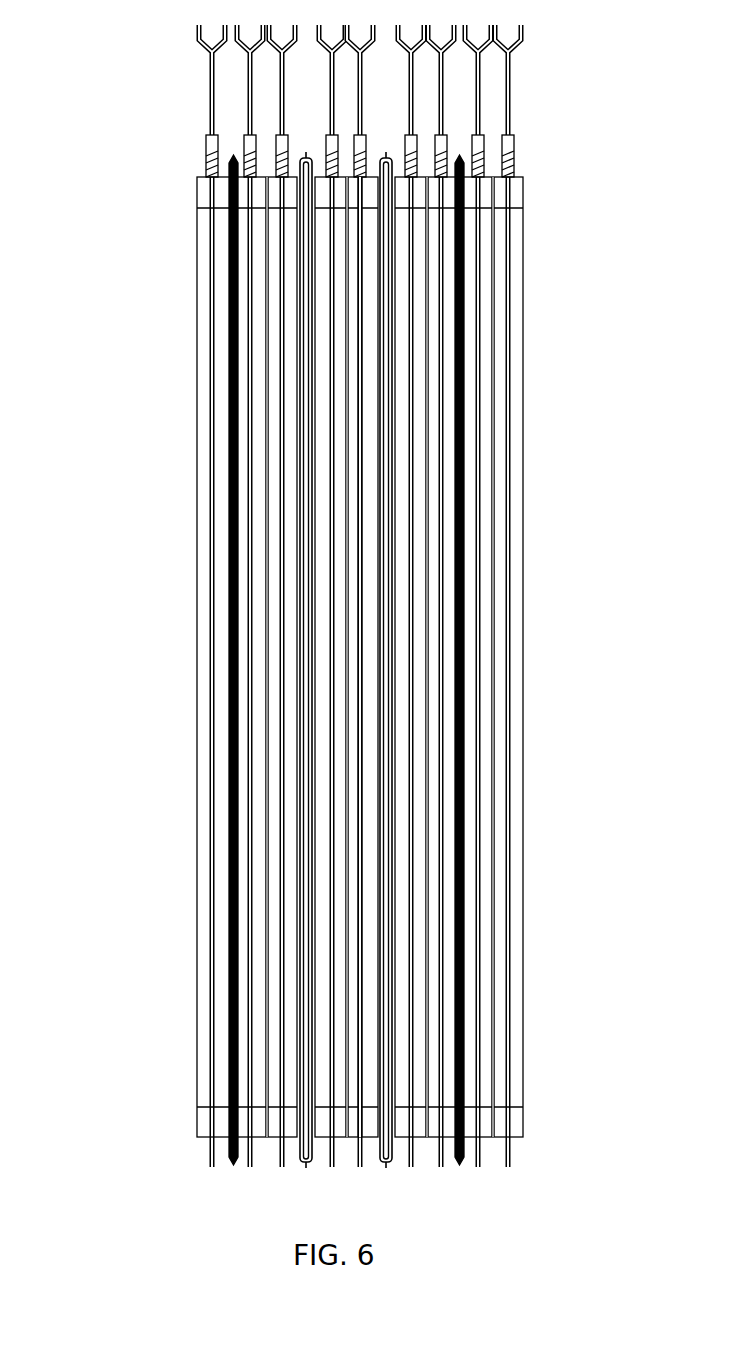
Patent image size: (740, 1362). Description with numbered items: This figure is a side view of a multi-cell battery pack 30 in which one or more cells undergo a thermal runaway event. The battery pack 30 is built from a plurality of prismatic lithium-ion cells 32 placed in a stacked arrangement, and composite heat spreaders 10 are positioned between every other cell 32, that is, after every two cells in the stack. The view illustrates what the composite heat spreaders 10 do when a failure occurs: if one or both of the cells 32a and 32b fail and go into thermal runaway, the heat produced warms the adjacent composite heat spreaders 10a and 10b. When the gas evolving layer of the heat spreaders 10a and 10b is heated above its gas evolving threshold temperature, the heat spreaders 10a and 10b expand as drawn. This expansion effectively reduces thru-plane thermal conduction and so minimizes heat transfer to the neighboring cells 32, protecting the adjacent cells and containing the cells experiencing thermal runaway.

The battery pack 30 is at (163, 151).
The composite heat spreader 10 is at (341, 660).
The composite heat spreader 10a is at (388, 480).
The composite heat spreader 10b is at (305, 588).
The prismatic lithium-ion cell 32 is at (462, 322).
The prismatic lithium-ion cell 32a is at (360, 548).
The prismatic lithium-ion cell 32b is at (325, 633).